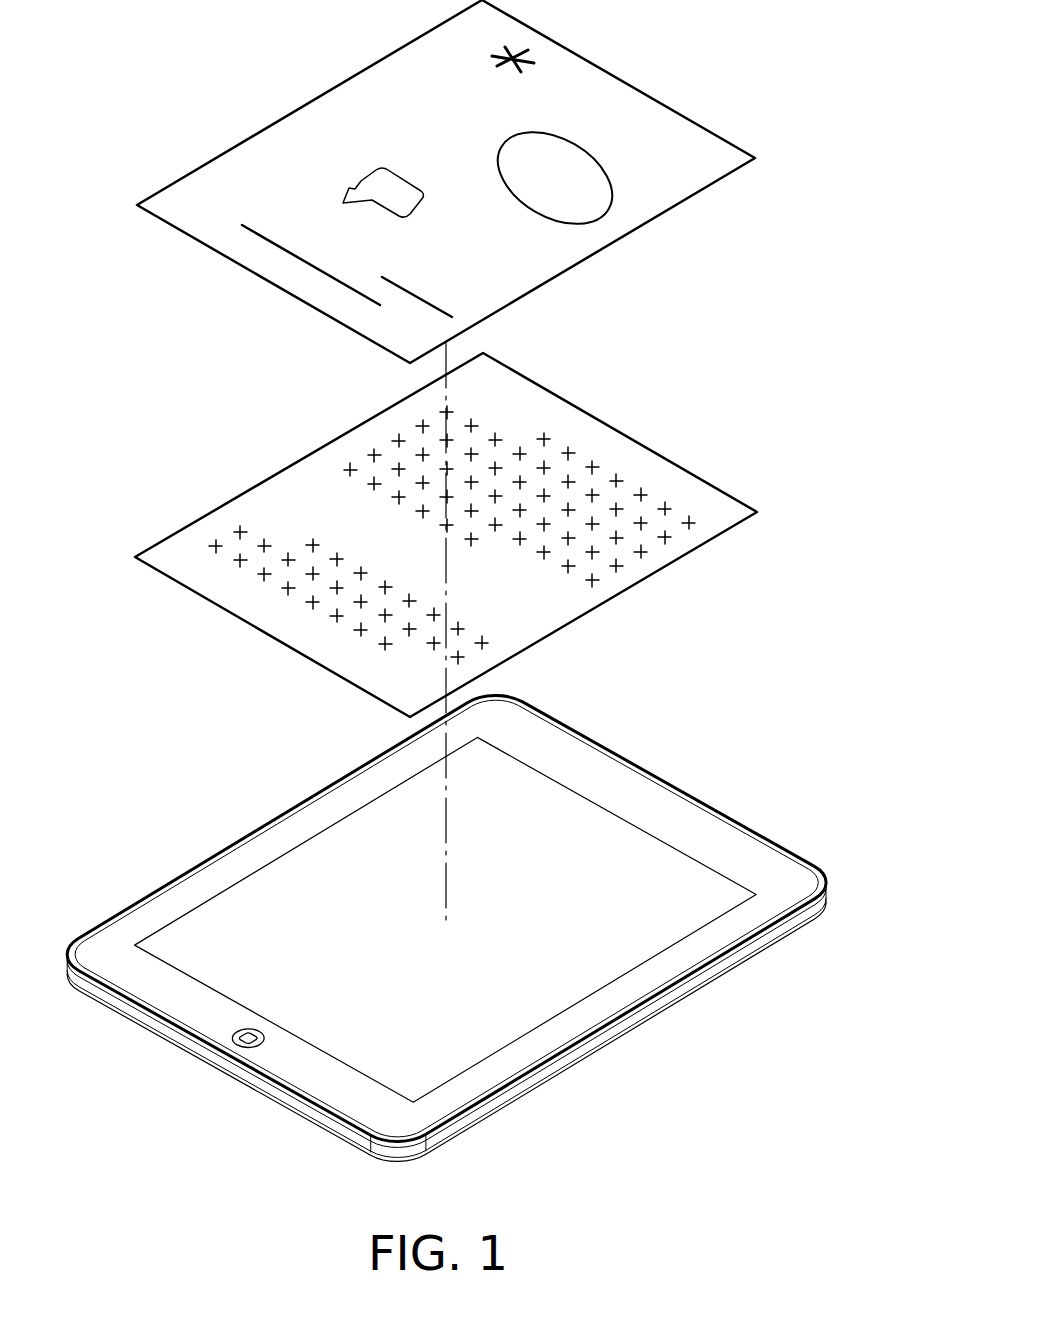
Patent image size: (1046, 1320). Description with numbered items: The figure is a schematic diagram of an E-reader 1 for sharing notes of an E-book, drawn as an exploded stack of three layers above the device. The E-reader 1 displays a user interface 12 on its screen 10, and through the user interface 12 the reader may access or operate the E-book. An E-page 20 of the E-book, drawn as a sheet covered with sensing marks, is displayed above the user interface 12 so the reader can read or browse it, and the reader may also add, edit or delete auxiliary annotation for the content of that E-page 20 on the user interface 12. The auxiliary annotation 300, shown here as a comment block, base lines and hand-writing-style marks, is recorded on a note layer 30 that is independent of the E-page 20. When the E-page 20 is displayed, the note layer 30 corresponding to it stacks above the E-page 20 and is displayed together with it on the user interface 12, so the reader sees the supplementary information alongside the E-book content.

The E-reader 1 is at (670, 996).
The screen 10 is at (226, 888).
The user interface 12 is at (589, 832).
The E-page 20 is at (680, 466).
The note layer 30 is at (683, 113).
The auxiliary annotation 300 is at (347, 182).